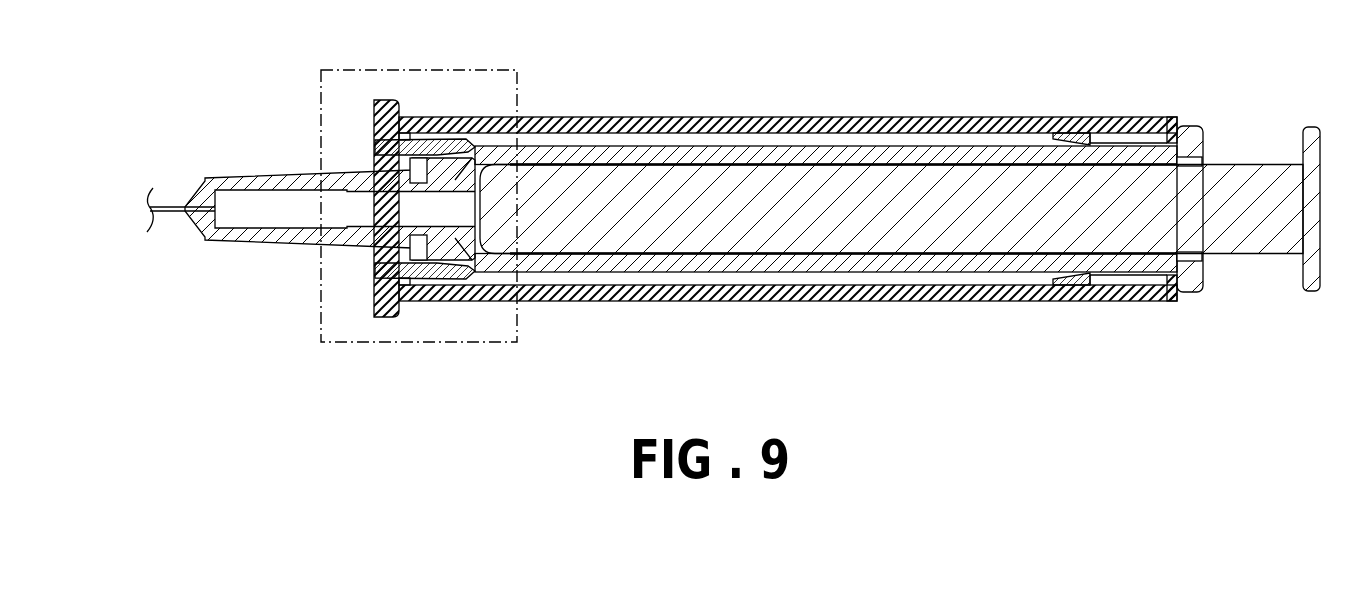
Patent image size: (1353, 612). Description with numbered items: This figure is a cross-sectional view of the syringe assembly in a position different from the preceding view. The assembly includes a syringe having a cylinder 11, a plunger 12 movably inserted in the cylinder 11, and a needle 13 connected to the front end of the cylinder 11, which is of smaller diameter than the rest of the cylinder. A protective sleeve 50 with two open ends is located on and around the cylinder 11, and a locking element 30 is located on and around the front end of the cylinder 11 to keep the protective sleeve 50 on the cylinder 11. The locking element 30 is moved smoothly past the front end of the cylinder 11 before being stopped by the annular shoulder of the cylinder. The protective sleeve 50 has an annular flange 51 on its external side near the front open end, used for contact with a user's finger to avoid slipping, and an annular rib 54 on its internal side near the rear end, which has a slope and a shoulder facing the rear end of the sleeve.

The cylinder 11 is at (743, 152).
The plunger 12 is at (1232, 182).
The needle 13 is at (172, 210).
The locking element 30 is at (373, 143).
The protective sleeve 50 is at (928, 117).
The annular flange 51 is at (383, 101).
The annular rib 54 is at (1079, 132).